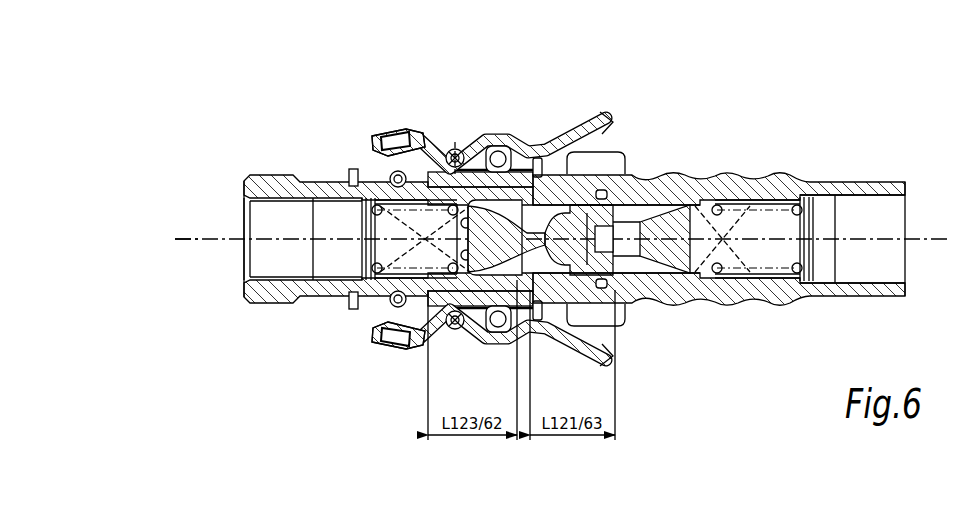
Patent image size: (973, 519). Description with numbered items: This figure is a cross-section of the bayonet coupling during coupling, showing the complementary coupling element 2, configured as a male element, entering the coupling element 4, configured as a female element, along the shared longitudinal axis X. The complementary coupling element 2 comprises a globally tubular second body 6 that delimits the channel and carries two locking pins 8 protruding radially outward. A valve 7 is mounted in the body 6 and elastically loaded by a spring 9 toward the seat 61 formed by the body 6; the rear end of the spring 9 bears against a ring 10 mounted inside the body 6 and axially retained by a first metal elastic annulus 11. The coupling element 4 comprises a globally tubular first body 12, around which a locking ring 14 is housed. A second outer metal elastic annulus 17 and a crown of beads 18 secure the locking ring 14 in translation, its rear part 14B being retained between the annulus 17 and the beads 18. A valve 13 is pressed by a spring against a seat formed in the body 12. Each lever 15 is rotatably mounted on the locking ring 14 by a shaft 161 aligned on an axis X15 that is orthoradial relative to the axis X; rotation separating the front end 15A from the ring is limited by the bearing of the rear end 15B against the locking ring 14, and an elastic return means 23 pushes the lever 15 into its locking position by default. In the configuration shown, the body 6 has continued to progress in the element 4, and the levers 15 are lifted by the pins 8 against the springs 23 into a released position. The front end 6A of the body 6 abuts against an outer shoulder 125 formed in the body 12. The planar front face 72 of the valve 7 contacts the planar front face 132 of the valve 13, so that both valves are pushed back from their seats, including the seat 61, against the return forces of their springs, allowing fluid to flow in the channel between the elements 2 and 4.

The complementary coupling element 2 is at (885, 143).
The coupling element 4 is at (217, 117).
The second body 6 is at (633, 187).
The front end of the body 6A is at (414, 134).
The valve 7 is at (665, 305).
The locking pins 8 is at (572, 125).
The spring 9 is at (722, 282).
The ring 10 is at (800, 195).
The first metal elastic annulus 11 is at (813, 207).
The first body 12 is at (322, 293).
The valve 13 is at (558, 235).
The locking ring 14 is at (516, 338).
The rear part of the locking ring 14B is at (358, 190).
The lever 15 is at (521, 136).
The front end of the lever 15A is at (608, 115).
The rear end of the lever 15B is at (396, 348).
The second outer metal elastic annulus 17 is at (351, 170).
The beads 18 is at (382, 306).
The elastic return means 23 is at (403, 130).
The seat 61 is at (697, 205).
The planar front face of the valve 72 is at (604, 322).
The outer shoulder 125 is at (458, 330).
The planar front face of the valve 132 is at (636, 214).
The shaft 161 is at (443, 149).
The axis X15 is at (478, 142).
The longitudinal axis X is at (179, 238).